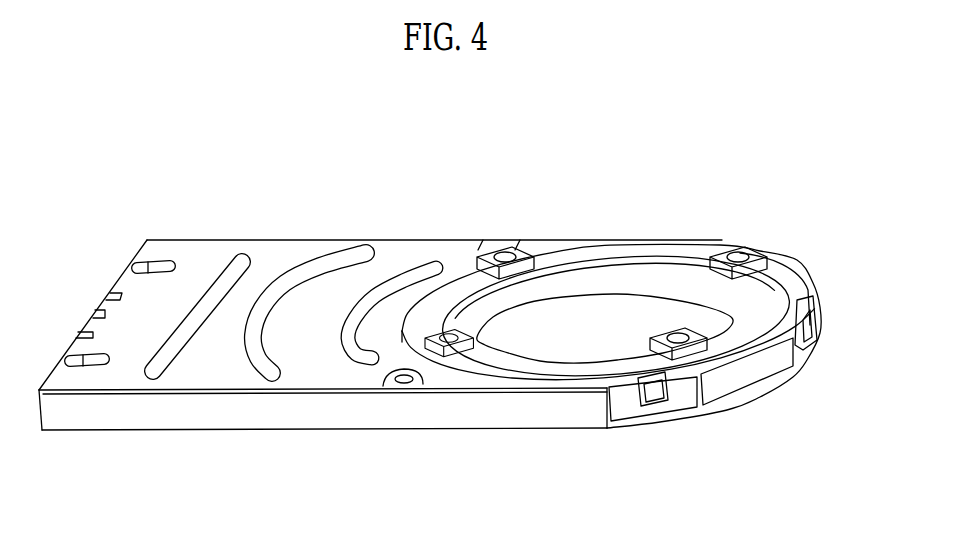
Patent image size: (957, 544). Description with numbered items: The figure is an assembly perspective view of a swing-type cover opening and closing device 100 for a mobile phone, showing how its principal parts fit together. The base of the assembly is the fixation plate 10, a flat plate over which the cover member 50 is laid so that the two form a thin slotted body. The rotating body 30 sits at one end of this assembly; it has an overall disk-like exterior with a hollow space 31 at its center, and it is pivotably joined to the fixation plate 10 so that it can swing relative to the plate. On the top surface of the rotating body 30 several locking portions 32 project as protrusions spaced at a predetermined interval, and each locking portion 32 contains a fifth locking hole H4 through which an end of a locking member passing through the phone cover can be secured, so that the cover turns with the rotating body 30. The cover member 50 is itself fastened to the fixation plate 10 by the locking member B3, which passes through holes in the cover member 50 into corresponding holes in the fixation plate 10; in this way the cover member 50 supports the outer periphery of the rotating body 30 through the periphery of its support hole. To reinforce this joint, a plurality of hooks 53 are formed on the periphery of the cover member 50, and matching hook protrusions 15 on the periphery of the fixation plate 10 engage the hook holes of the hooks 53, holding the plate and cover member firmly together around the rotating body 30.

The swing-type cover opening and closing device 100 is at (449, 125).
The fixation plate 10 is at (219, 432).
The cover member 50 is at (309, 238).
The rotating body 30 is at (455, 378).
The hollow space 31 is at (598, 316).
The locking portion 32 is at (683, 356).
The fifth locking hole H4 is at (741, 256).
The locking member B3 is at (398, 388).
The hook 53 is at (626, 410).
The hook protrusion 15 is at (657, 402).